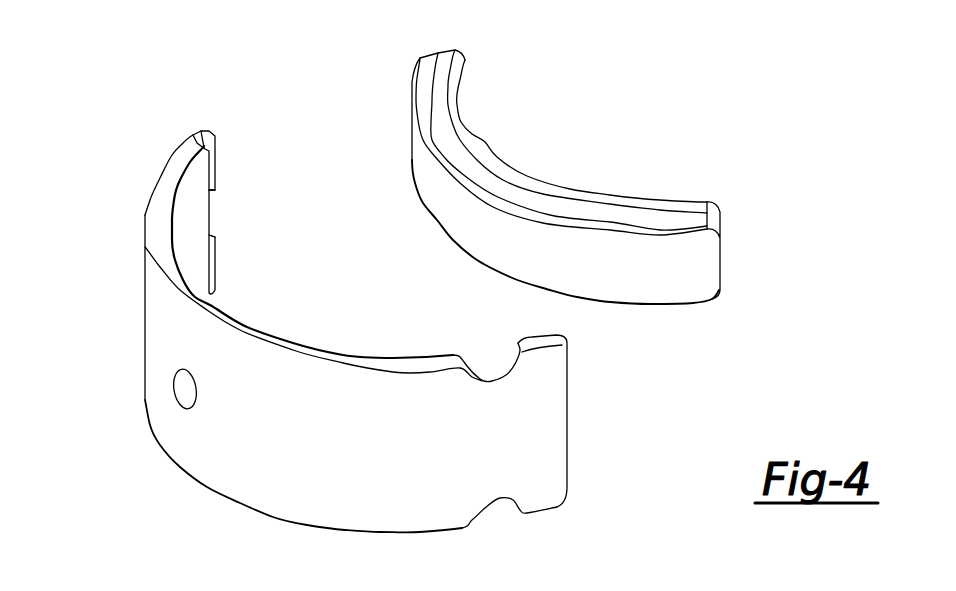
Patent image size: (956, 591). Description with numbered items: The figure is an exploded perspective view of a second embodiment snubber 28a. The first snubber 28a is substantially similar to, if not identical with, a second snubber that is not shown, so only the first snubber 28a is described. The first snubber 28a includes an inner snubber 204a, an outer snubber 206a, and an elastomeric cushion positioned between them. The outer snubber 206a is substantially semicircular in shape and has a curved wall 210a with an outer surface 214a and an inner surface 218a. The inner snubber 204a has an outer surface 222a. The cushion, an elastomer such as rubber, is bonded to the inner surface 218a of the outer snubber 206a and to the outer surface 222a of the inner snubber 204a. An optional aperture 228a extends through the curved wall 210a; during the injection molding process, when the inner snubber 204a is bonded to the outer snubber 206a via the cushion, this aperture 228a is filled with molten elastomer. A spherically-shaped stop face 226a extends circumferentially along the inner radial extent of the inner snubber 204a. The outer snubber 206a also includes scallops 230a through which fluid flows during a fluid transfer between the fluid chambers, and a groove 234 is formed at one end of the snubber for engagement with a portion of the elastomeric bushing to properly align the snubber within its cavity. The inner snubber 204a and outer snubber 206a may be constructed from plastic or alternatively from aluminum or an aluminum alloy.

The first snubber 28a is at (301, 62).
The inner snubber 204a is at (735, 248).
The outer snubber 206a is at (580, 429).
The curved wall 210a is at (178, 165).
The outer surface 214a is at (183, 338).
The inner surface 218a is at (178, 228).
The outer surface 222a is at (632, 268).
The spherically-shaped stop face 226a is at (458, 86).
The aperture 228a is at (183, 392).
The scallops 230a is at (492, 377).
The groove 234 is at (208, 215).